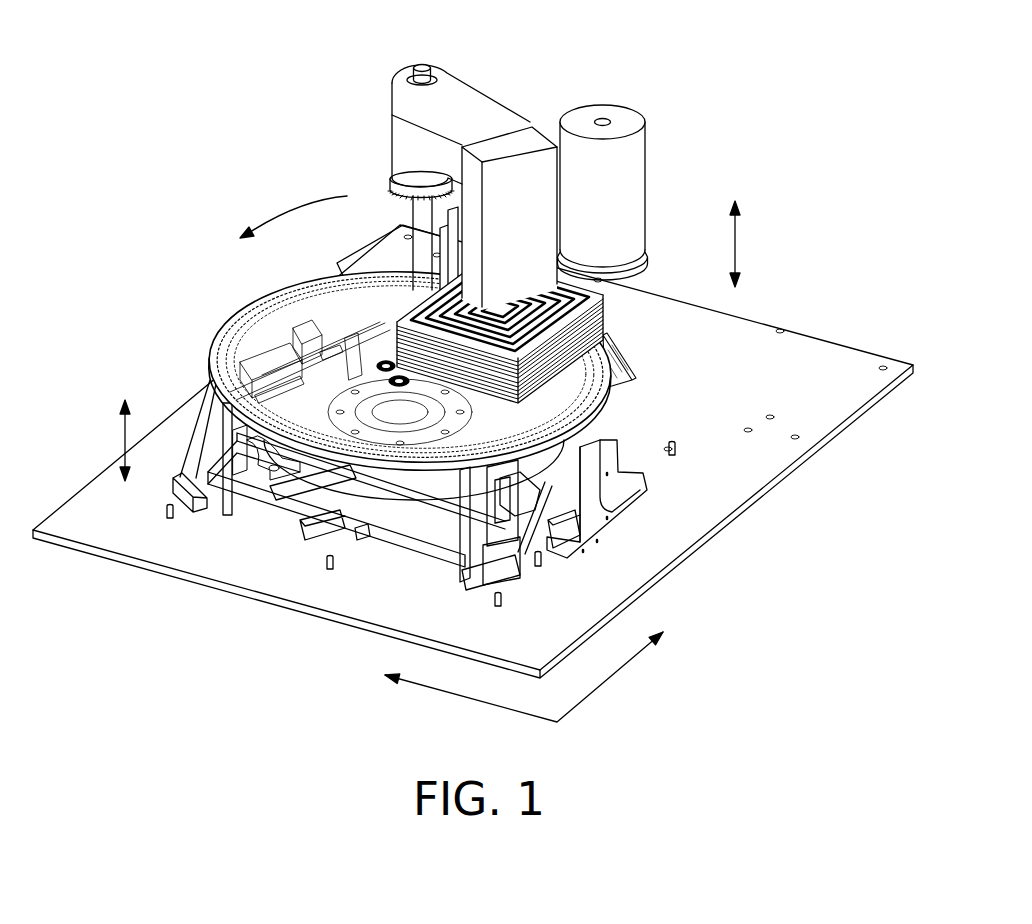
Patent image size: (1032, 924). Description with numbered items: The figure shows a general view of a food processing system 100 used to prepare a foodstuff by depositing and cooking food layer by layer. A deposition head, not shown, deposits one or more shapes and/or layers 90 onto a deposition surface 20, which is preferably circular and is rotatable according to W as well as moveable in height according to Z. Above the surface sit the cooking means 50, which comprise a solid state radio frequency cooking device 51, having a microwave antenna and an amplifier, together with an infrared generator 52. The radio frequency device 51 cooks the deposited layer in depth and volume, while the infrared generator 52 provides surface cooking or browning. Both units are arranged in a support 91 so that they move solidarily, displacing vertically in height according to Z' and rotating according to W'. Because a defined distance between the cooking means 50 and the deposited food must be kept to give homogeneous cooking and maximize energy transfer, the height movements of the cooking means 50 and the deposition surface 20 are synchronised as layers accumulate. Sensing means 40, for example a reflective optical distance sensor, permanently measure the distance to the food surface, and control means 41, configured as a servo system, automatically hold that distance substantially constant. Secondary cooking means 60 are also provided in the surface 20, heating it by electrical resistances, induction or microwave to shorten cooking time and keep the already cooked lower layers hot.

The food processing system 100 is at (136, 210).
The deposition surface 20 is at (212, 356).
The sensing means 40 is at (445, 242).
The control means 41 is at (435, 245).
The cooking means 50 is at (503, 216).
The solid state radio frequency cooking device 51 is at (540, 134).
The infrared generator 52 is at (630, 112).
The secondary cooking means 60 is at (627, 364).
The shapes and/or layers 90 is at (604, 322).
The support 91 is at (405, 76).